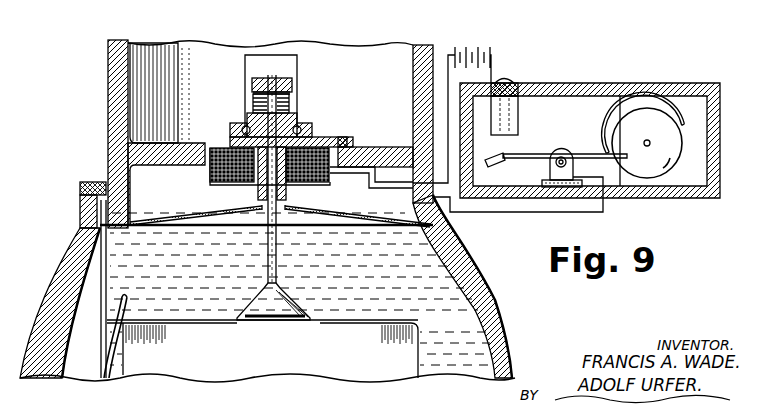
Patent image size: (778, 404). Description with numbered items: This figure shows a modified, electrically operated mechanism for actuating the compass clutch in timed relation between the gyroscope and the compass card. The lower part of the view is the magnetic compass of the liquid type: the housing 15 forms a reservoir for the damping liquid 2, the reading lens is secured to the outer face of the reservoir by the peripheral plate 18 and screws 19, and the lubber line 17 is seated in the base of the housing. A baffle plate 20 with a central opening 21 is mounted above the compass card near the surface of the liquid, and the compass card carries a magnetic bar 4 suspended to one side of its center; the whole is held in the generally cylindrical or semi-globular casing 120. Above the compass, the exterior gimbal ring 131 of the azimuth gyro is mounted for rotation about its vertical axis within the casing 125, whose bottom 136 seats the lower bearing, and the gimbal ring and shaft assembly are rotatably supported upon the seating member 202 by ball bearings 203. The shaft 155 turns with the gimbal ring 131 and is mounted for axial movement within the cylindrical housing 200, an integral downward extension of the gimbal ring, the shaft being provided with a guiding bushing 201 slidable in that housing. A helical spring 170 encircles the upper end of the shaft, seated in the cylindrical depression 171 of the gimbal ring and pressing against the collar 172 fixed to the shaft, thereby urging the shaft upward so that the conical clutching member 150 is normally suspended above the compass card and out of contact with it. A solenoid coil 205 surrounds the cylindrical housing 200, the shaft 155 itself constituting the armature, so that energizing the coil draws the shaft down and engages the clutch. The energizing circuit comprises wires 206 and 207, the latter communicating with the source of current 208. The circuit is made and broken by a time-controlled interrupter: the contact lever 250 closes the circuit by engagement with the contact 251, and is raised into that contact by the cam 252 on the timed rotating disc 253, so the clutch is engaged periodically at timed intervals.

The casing 125 is at (108, 68).
The bottom of casing 136 is at (108, 153).
The screws 19 is at (80, 190).
The peripheral plate 18 is at (80, 222).
The housing 15 is at (45, 292).
The damping liquid 2 is at (125, 266).
The baffle plate 20 is at (188, 222).
The central opening 21 is at (250, 212).
The exterior gimbal ring 131 is at (258, 70).
The collar 172 is at (284, 78).
The helical spring 170 is at (292, 96).
The cylindrical depression 171 is at (252, 101).
The ball bearings 203 is at (300, 128).
The seating member 202 is at (236, 137).
The guiding bushing 201 is at (305, 138).
The solenoid coil 205 is at (212, 178).
The shaft 155 is at (262, 190).
The cylindrical housing 200 is at (288, 193).
The conical clutching member 150 is at (236, 314).
The lubber line 17 is at (128, 296).
The wire 206 is at (415, 115).
The casing 120 is at (498, 304).
The source of current 208 is at (476, 34).
The wire 207 is at (494, 212).
The contact 251 is at (520, 119).
The contact lever 250 is at (520, 155).
The timed rotating disc 253 is at (672, 145).
The cam 252 is at (658, 110).
The magnetic bar 4 is at (175, 200).